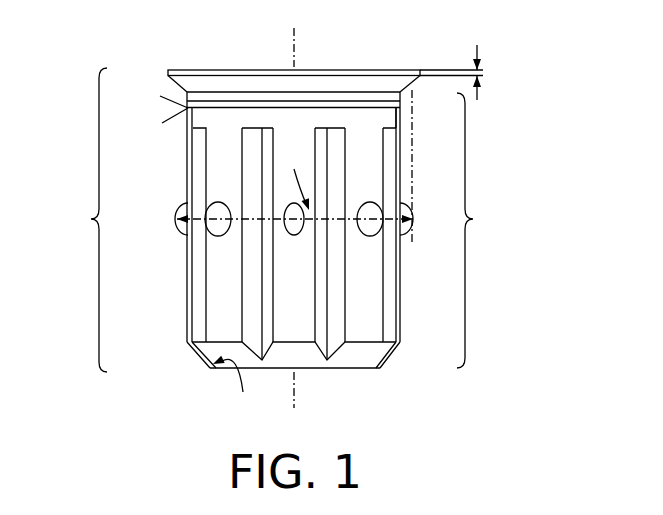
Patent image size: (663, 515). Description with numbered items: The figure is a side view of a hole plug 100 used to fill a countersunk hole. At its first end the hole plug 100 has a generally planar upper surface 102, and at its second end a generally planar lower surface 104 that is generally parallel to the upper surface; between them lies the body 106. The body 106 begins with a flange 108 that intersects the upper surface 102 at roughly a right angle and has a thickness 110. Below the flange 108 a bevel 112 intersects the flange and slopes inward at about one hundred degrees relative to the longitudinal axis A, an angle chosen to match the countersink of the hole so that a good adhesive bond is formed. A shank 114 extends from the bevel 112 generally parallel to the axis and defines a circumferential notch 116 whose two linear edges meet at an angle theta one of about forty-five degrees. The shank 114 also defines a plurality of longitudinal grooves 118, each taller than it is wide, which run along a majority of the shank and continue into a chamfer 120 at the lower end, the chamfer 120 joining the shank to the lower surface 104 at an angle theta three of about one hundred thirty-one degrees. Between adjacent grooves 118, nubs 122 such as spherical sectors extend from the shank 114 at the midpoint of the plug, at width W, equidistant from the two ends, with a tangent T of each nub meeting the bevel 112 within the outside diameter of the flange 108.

The hole plug 100 is at (190, 33).
The upper surface 102 is at (371, 66).
The lower surface 104 is at (354, 378).
The body 106 is at (76, 220).
The flange 108 is at (178, 84).
The thickness 110 is at (479, 52).
The bevel 112 is at (187, 93).
The shank 114 is at (483, 230).
The notch 116 is at (400, 108).
The grooves 118 is at (197, 165).
The chamfer 120 is at (381, 366).
The nubs 122 is at (212, 232).